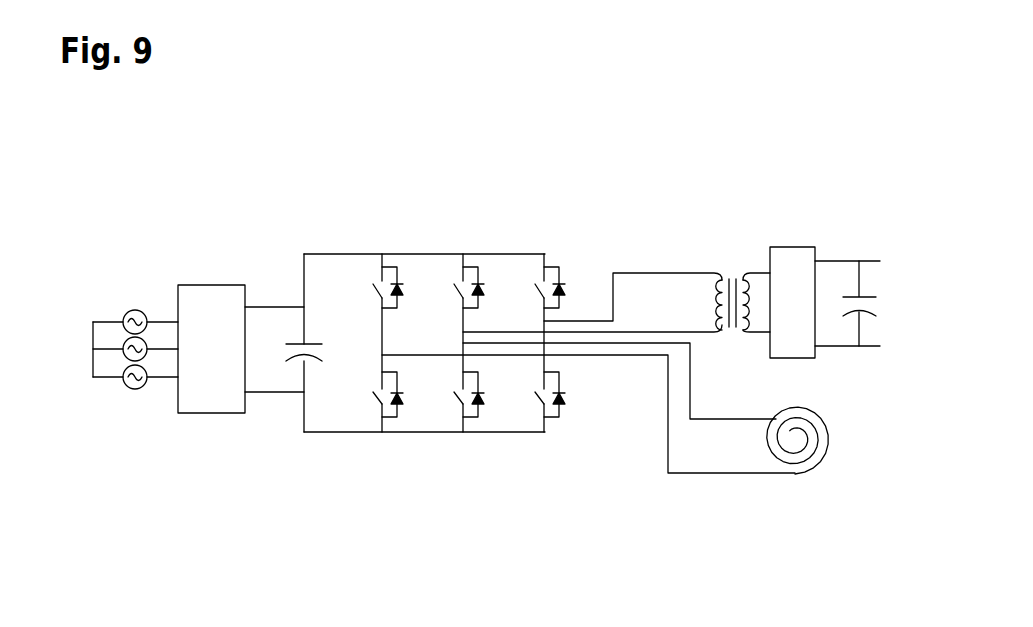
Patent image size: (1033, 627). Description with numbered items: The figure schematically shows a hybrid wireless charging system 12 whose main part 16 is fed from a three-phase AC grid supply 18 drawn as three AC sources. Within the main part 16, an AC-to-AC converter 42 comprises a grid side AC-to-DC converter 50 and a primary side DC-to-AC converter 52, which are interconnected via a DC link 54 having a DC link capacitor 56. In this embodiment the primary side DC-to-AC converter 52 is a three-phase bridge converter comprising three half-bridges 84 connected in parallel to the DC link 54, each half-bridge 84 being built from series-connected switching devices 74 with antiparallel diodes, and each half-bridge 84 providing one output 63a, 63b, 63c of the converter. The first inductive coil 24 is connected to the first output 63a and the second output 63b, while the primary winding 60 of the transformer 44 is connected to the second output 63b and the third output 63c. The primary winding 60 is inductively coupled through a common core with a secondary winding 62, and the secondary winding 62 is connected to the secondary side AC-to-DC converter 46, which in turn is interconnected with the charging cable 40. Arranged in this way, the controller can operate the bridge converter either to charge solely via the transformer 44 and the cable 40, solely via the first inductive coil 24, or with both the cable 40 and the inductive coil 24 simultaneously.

The wireless charging system 12 is at (858, 202).
The main part 16 is at (172, 210).
The AC voltage sources 18 is at (93, 335).
The first inductive coil 24 is at (795, 476).
The charging cable 40 is at (888, 283).
The AC-to-AC converter 42 is at (288, 168).
The transformer 44 is at (734, 275).
The secondary side AC-to-DC converter 46 is at (793, 246).
The grid side AC-to-DC converter 50 is at (213, 285).
The primary side DC-to-AC converter 52 is at (484, 172).
The DC link 54 is at (305, 243).
The DC link capacitor 56 is at (299, 362).
The primary winding 60 is at (716, 277).
The secondary winding 62 is at (746, 277).
The first output 63a is at (633, 357).
The second output 63b is at (463, 338).
The third output 63c is at (585, 320).
The switching devices 74 is at (380, 268).
The half-bridges 84 is at (383, 447).